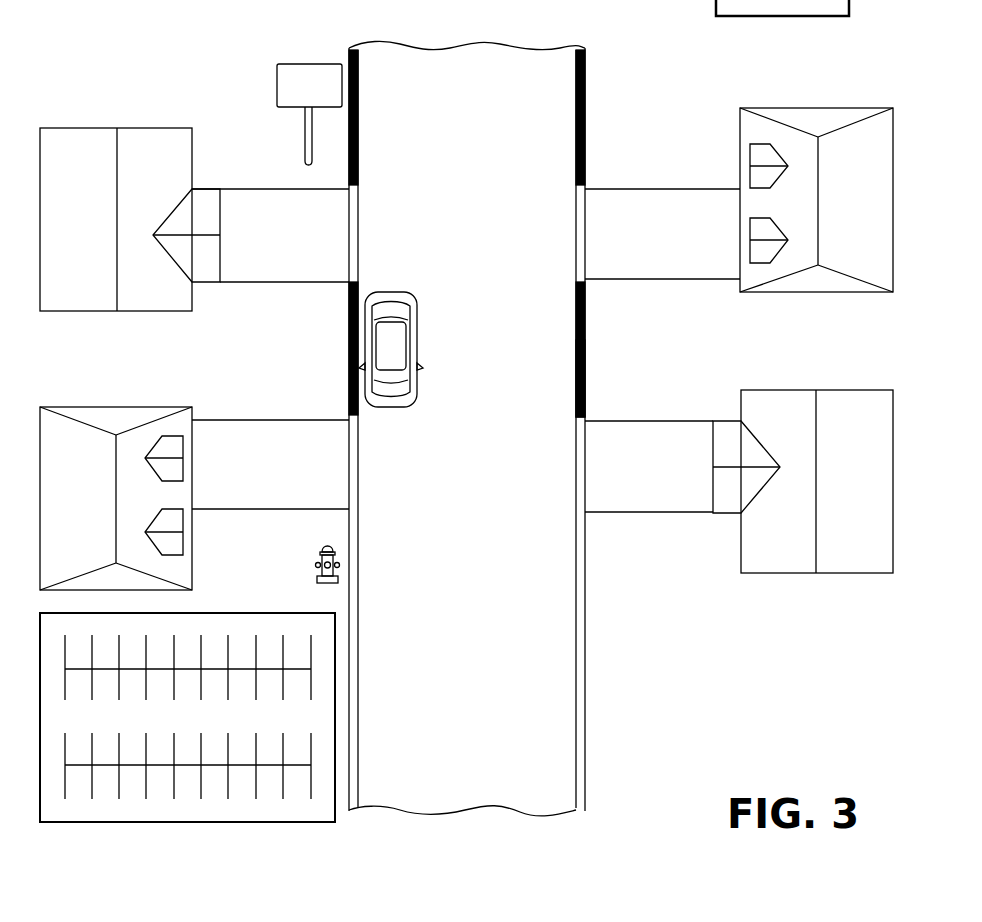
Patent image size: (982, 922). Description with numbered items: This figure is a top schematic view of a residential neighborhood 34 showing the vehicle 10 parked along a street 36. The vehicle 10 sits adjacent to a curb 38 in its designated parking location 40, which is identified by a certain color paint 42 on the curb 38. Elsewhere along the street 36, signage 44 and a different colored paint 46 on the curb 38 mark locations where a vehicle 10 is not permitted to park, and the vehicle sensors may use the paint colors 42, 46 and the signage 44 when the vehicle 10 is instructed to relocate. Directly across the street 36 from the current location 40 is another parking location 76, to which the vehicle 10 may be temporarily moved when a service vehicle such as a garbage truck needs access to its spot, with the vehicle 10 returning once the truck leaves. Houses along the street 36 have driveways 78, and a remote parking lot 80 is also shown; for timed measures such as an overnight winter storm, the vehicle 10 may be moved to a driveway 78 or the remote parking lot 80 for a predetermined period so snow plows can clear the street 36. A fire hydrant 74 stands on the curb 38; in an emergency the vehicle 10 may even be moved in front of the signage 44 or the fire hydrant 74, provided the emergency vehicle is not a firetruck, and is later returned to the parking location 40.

The vehicle 10 is at (434, 302).
The residential neighborhood 34 is at (216, 71).
The street 36 is at (510, 105).
The curb 38 is at (355, 642).
The designated parking location 40 is at (349, 322).
The paint 42 is at (349, 370).
The signage 44 is at (309, 63).
The paint 46 is at (358, 138).
The fire hydrant 74 is at (323, 548).
The parking location 76 is at (558, 387).
The driveway 78 is at (262, 207).
The remote parking lot 80 is at (322, 720).